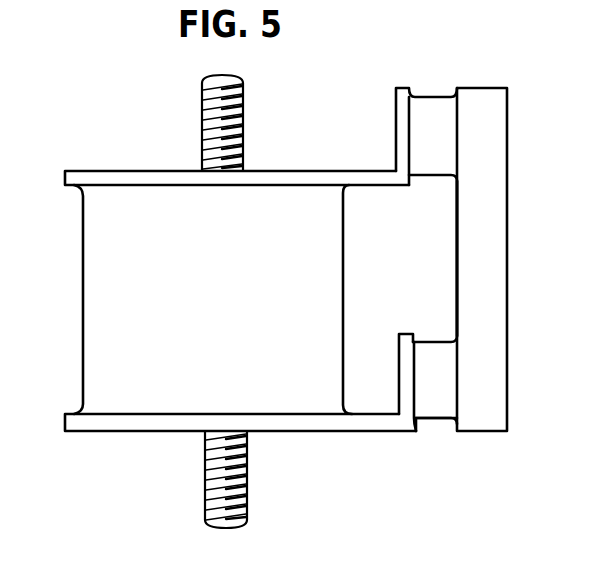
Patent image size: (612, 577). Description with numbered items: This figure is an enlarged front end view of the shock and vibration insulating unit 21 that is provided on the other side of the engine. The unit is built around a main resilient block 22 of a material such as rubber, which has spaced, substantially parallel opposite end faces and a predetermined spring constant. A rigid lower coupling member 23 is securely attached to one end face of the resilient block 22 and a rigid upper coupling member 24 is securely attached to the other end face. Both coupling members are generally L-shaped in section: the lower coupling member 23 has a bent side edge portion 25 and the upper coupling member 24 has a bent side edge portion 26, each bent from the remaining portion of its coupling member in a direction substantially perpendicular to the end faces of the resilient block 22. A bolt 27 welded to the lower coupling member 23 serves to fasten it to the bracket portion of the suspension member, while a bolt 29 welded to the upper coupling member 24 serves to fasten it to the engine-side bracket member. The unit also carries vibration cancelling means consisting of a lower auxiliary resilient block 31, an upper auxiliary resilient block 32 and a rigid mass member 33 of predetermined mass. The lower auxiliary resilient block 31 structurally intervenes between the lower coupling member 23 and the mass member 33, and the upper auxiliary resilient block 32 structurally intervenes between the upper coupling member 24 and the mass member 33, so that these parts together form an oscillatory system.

The shock and vibration insulating unit 21 is at (166, 76).
The main resilient block 22 is at (83, 306).
The lower coupling member 23 is at (135, 432).
The upper coupling member 24 is at (128, 131).
The side edge portion of lower coupling member 25 is at (403, 300).
The side edge portion of upper coupling member 26 is at (396, 119).
The bolt 27 is at (295, 452).
The bolt 29 is at (289, 76).
The lower auxiliary resilient block 31 is at (446, 419).
The upper auxiliary resilient block 32 is at (433, 170).
The rigid mass member 33 is at (458, 246).